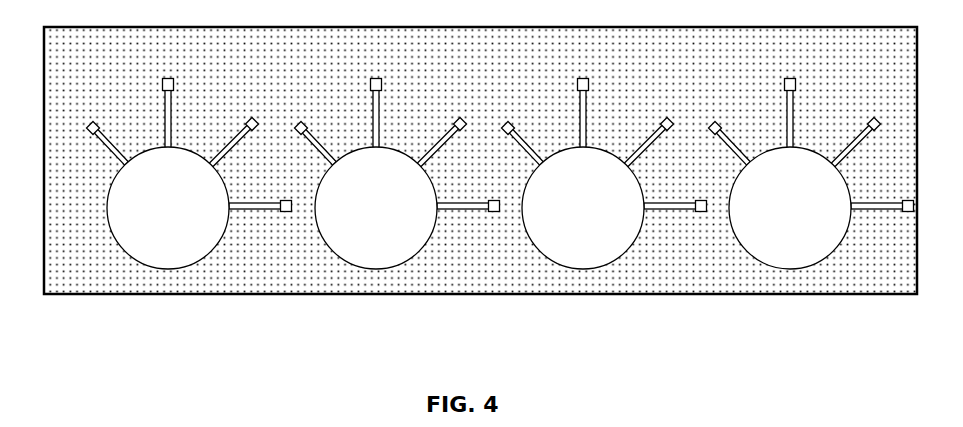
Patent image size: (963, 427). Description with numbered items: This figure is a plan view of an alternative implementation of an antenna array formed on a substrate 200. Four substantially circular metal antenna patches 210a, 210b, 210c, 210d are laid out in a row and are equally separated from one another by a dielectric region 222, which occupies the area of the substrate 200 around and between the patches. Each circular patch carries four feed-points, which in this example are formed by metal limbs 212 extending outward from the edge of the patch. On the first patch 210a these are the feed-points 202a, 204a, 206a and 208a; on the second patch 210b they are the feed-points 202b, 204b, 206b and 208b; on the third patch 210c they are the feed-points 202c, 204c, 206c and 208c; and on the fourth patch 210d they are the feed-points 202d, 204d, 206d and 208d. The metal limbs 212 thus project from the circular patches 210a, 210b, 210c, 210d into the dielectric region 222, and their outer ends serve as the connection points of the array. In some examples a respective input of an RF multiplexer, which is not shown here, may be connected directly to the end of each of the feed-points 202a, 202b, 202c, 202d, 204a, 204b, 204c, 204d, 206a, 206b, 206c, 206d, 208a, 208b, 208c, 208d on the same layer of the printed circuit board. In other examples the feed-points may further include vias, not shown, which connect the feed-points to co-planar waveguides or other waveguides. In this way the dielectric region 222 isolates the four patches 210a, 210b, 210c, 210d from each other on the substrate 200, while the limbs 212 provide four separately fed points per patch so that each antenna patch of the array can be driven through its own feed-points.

The substrate 200 is at (480, 187).
The feed-point 202a is at (93, 122).
The feed-point 202b is at (301, 122).
The feed-point 202c is at (508, 122).
The feed-point 202d is at (715, 122).
The feed-point 204a is at (163, 80).
The feed-point 204b is at (371, 80).
The feed-point 204c is at (578, 80).
The feed-point 204d is at (785, 80).
The feed-point 206a is at (248, 119).
The feed-point 206b is at (456, 119).
The feed-point 206c is at (663, 119).
The feed-point 206d is at (871, 119).
The feed-point 208a is at (287, 212).
The feed-point 208b is at (495, 212).
The feed-point 208c is at (703, 212).
The feed-point 208d is at (909, 212).
The circular metal antenna patch 210a is at (148, 216).
The circular metal antenna patch 210b is at (356, 216).
The circular metal antenna patch 210c is at (563, 216).
The circular metal antenna patch 210d is at (770, 216).
The metal limb 212 is at (157, 132).
The dielectric region 222 is at (318, 272).